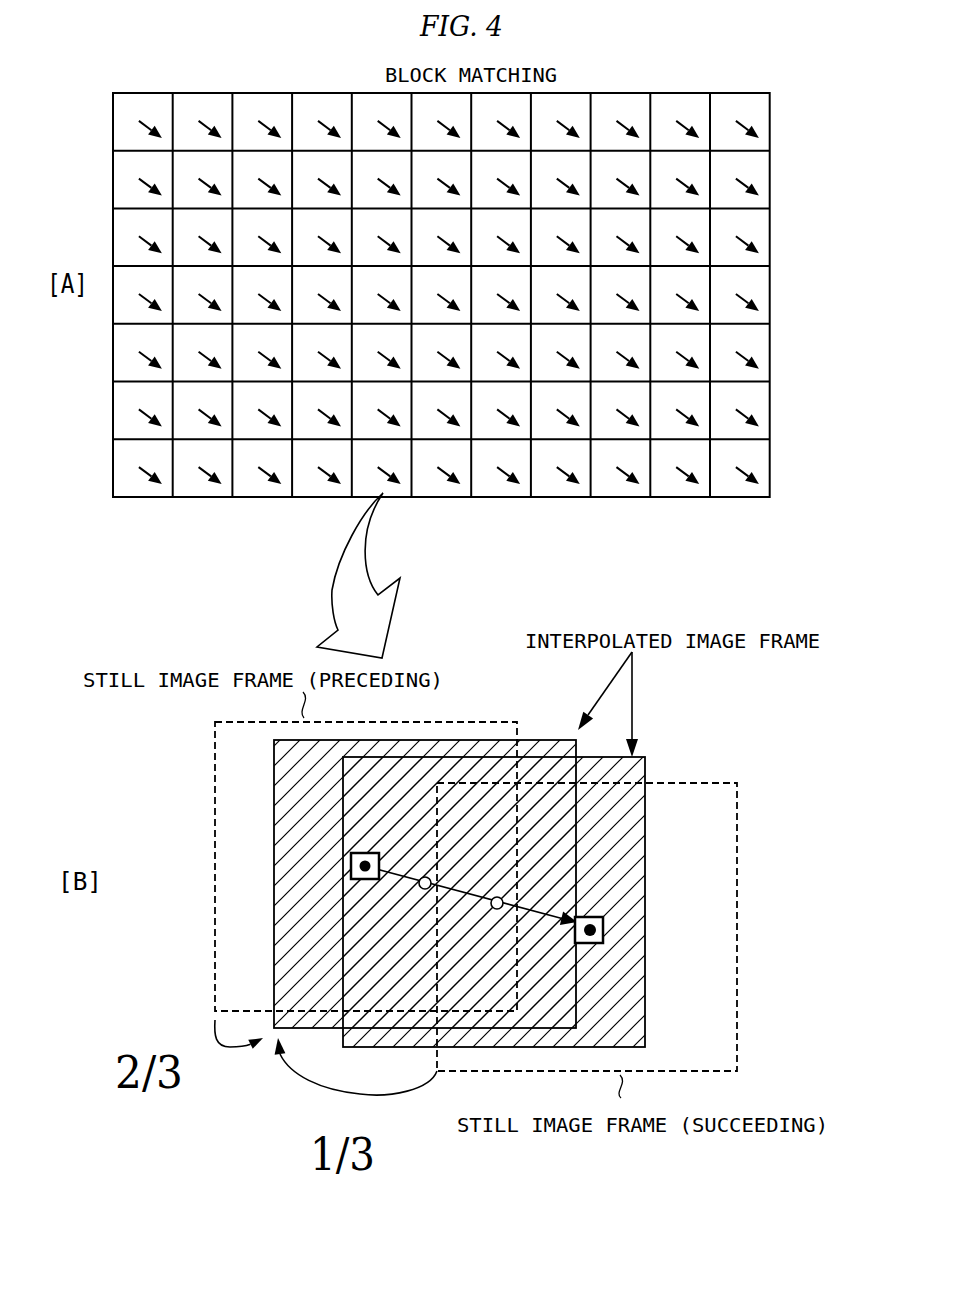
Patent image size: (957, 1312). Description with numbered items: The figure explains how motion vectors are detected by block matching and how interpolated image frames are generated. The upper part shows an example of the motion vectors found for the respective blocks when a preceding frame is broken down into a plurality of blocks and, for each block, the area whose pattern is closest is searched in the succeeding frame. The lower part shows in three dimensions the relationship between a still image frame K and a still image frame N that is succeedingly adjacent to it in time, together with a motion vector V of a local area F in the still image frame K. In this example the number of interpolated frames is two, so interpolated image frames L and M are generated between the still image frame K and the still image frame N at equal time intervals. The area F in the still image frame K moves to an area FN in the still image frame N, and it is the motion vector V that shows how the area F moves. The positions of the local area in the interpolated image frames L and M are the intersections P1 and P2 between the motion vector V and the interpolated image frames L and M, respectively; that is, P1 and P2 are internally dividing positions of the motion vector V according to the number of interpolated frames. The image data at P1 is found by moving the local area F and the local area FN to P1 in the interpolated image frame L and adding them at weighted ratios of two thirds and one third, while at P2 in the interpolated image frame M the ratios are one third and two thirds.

The still image frame K is at (502, 718).
The interpolated image frame L is at (553, 737).
The interpolated image frame M is at (645, 767).
The still image frame N is at (724, 789).
The local area F is at (351, 867).
The local area FN is at (578, 921).
The motion vector V is at (540, 905).
The intersection P1 is at (423, 870).
The intersection P2 is at (492, 884).